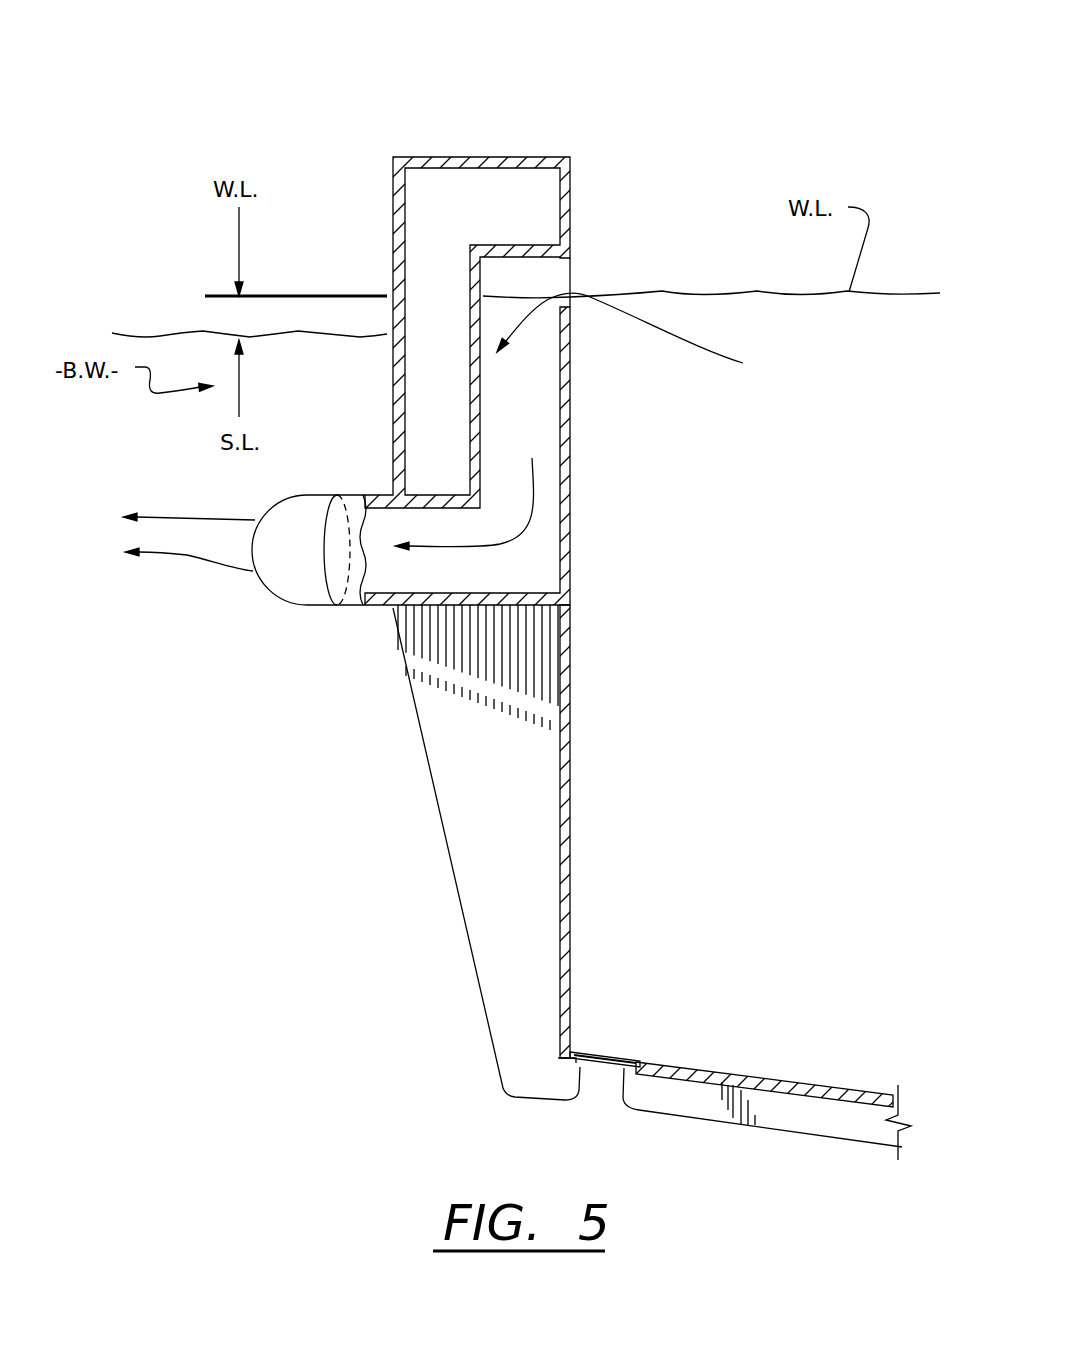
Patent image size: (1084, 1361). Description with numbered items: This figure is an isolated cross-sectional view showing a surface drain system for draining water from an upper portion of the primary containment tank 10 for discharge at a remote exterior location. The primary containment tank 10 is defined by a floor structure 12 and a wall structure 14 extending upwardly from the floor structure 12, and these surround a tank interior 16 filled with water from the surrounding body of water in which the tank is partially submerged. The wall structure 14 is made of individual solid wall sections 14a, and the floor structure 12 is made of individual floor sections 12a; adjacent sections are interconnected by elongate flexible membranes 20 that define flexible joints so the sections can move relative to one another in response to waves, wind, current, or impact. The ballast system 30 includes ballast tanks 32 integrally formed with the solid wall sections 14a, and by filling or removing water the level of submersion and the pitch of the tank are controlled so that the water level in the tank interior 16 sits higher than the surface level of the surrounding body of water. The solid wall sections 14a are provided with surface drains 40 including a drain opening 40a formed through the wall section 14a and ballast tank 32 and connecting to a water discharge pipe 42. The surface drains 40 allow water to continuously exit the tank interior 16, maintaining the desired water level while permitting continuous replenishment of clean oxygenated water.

The primary containment tank 10 is at (520, 115).
The floor structure 12 is at (840, 1133).
The floor section 12a is at (673, 1065).
The wall structure 14 is at (434, 156).
The solid wall section 14a is at (572, 640).
The tank interior 16 is at (680, 680).
The flexible membrane 20 is at (613, 1056).
The ballast system 30 is at (526, 193).
The ballast tank 32 is at (393, 198).
The surface drain 40 is at (533, 423).
The drain opening 40a is at (570, 267).
The water discharge pipe 42 is at (355, 495).